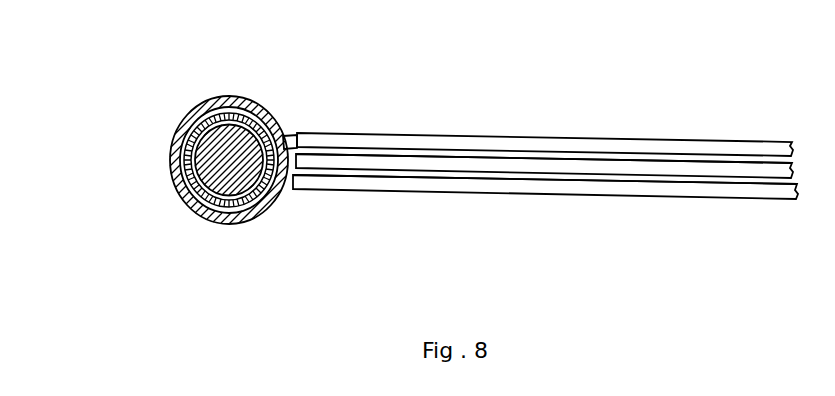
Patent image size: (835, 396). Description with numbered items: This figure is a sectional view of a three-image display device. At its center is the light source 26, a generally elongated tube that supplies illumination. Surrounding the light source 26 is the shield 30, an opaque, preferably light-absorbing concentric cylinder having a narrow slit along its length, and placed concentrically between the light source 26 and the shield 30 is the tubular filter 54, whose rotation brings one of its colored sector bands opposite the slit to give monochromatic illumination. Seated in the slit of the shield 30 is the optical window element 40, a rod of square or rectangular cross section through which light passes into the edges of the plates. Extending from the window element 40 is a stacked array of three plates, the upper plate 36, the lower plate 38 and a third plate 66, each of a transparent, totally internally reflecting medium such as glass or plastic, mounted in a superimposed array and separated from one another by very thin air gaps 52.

The light source 26 is at (210, 178).
The shield 30 is at (192, 108).
The upper plate 36 is at (547, 145).
The lower plate 38 is at (605, 162).
The optical window element 40 is at (288, 135).
The separation gap 52 is at (638, 160).
The filter 54 is at (185, 156).
The plate 66 is at (547, 187).